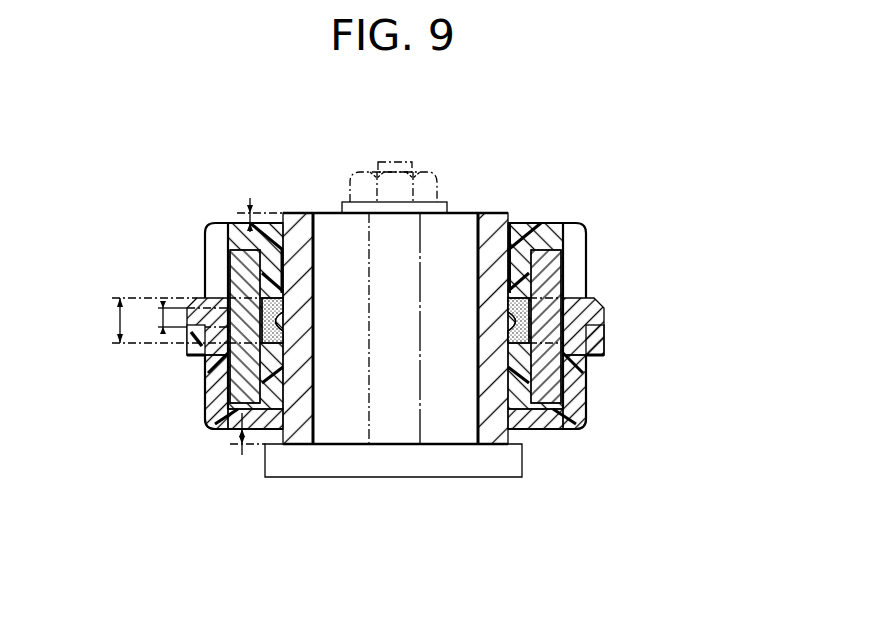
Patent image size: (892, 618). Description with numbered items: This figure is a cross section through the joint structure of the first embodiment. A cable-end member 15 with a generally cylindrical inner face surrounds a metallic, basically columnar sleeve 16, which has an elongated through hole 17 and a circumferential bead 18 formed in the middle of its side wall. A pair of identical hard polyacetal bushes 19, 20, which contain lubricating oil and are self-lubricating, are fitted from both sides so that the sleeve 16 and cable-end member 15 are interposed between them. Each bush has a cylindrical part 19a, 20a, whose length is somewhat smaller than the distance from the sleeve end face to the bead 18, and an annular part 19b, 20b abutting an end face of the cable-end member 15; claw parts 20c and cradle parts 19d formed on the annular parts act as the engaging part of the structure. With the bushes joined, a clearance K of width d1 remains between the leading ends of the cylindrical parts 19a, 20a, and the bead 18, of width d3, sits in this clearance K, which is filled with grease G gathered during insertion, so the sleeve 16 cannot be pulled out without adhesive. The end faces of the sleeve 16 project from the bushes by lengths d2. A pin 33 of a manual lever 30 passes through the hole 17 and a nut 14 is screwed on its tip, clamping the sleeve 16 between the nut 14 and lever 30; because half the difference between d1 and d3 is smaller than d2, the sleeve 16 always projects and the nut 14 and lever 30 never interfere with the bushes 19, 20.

The nut 14 is at (432, 170).
The cable-end member 15 is at (228, 271).
The sleeve 16 is at (298, 208).
The through hole 17 is at (480, 226).
The bead 18 is at (545, 328).
The bush 19 is at (533, 209).
The cylindrical part 19a is at (508, 233).
The annular part 19b is at (548, 221).
The cradle part 19d is at (200, 356).
The bush 20 is at (201, 436).
The cylindrical part 20a is at (527, 420).
The annular part 20b is at (556, 431).
The claw part 20c is at (205, 397).
The manual lever 30 is at (318, 478).
The pin 33 is at (370, 355).
The grease G is at (540, 312).
The clearance K is at (280, 346).
The width of the clearance d1 is at (158, 320).
The projection length d2 is at (249, 330).
The width of the bead d3 is at (157, 319).